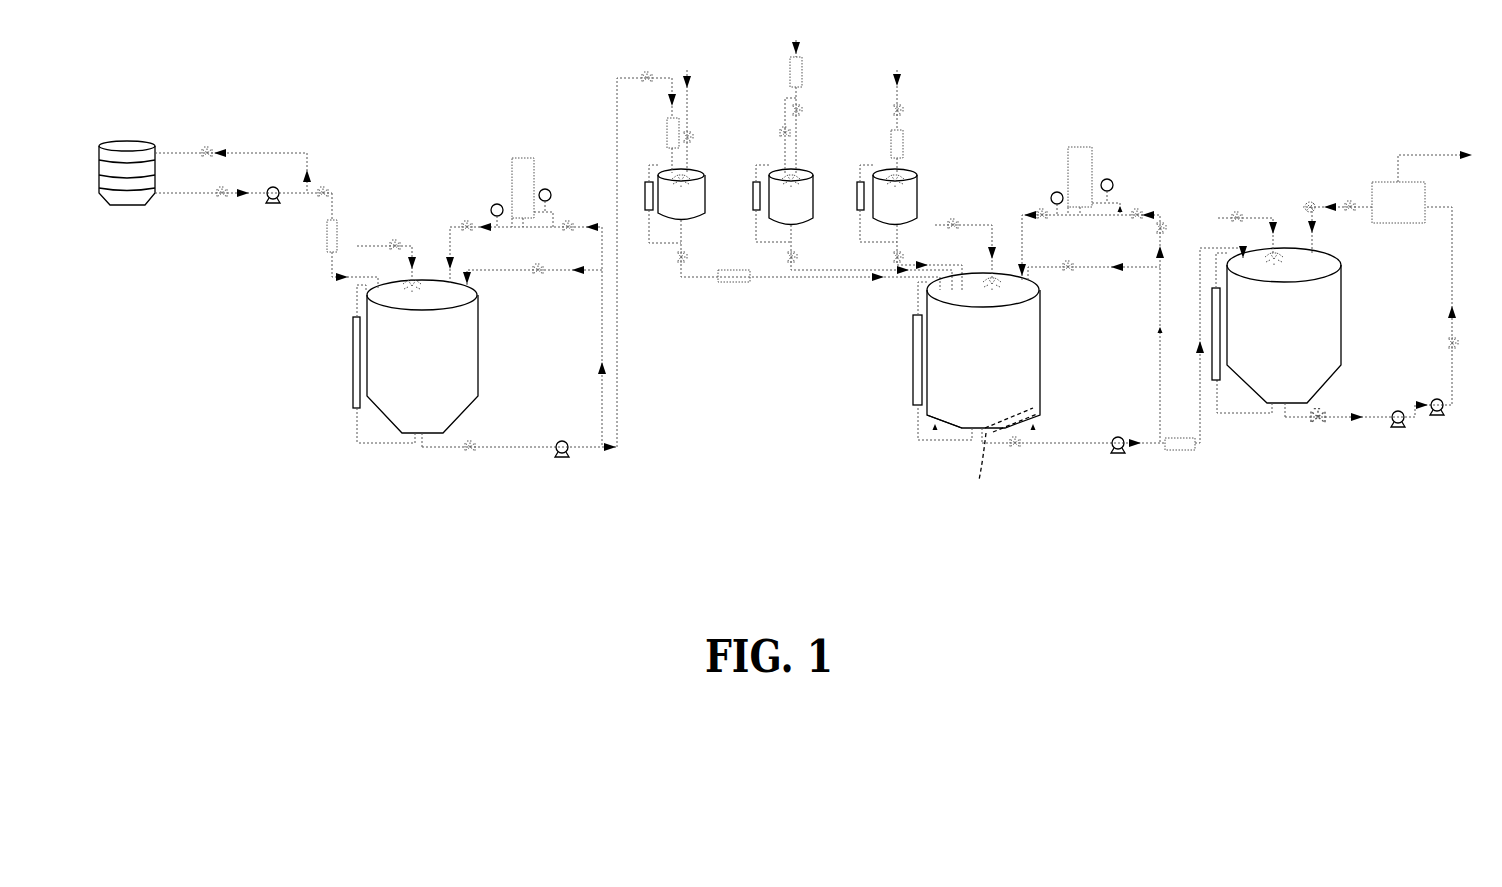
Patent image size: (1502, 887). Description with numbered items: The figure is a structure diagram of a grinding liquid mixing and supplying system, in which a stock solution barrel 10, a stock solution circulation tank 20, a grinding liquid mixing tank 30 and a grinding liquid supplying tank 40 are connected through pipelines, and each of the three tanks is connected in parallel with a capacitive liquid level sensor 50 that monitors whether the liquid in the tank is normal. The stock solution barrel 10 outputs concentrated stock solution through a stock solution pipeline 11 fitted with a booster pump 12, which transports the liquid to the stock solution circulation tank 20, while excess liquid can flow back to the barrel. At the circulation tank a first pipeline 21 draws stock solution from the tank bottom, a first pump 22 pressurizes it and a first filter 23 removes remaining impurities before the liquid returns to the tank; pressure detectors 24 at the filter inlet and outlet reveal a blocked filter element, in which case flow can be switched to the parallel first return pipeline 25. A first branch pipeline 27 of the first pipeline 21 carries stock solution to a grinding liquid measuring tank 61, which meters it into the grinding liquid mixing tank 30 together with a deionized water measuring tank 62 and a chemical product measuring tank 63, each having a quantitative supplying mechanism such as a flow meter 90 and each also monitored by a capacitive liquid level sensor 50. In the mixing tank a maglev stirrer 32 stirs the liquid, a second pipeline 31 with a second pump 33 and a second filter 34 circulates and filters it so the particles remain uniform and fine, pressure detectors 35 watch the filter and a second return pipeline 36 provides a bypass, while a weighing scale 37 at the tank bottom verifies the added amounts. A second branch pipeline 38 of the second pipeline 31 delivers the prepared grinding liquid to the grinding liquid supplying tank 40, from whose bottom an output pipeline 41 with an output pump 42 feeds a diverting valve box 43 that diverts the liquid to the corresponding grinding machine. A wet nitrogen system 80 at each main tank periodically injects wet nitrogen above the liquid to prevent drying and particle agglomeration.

The stock solution barrel 10 is at (126, 145).
The stock solution pipeline 11 is at (196, 197).
The booster pump 12 is at (273, 202).
The stock solution circulation tank 20 is at (465, 373).
The first pipeline 21 is at (450, 225).
The first pump 22 is at (562, 457).
The first filter 23 is at (522, 158).
The pressure detectors 24 is at (497, 204).
The first return pipeline 25 is at (553, 278).
The first branch pipeline 27 is at (632, 76).
The grinding liquid mixing tank 30 is at (1025, 385).
The second pipeline 31 is at (1022, 240).
The maglev stirrer 32 is at (1004, 459).
The second pump 33 is at (1120, 452).
The second filter 34 is at (1080, 147).
The pressure detectors 35 is at (1057, 190).
The second return pipeline 36 is at (1090, 280).
The weighing scale 37 is at (930, 430).
The second branch pipeline 38 is at (1205, 250).
The grinding liquid supplying tank 40 is at (1328, 343).
The output pipeline 41 is at (1372, 420).
The output pump 42 is at (1400, 430).
The diverting valve box 43 is at (1383, 182).
The capacitive liquid level sensor 50 is at (353, 343).
The grinding liquid measuring tank 61 is at (705, 195).
The deionized water measuring tank 62 is at (813, 195).
The chemical product measuring tank 63 is at (917, 195).
The wet nitrogen system 80 is at (412, 280).
The flow meter 90 is at (325, 252).